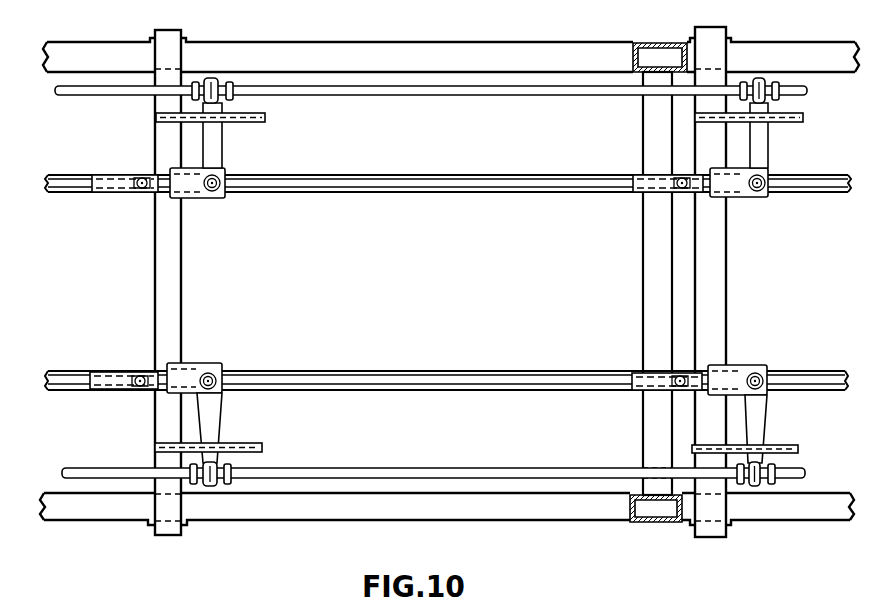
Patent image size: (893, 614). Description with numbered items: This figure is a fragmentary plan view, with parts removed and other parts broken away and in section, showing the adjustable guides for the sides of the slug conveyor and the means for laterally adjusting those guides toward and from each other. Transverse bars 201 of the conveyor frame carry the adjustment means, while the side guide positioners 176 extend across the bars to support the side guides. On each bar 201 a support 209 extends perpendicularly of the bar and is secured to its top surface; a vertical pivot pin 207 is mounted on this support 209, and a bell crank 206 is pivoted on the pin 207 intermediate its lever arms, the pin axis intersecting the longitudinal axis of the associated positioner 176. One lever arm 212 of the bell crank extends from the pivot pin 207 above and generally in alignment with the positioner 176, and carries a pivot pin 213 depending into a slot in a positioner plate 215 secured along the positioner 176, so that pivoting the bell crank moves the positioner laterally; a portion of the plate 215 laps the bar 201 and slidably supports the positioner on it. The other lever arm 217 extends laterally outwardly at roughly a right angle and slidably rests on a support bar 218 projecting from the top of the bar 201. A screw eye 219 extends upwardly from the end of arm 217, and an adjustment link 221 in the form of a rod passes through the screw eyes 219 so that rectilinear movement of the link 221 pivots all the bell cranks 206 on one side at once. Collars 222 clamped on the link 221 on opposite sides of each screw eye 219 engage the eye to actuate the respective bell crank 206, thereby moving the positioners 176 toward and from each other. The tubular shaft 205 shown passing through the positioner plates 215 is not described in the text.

The side guide positioner 176 is at (391, 191).
The transverse bar 201 is at (155, 282).
The tubular shaft 205 is at (492, 183).
The bell crank 206 is at (764, 153).
The vertical pivot pin 207 is at (224, 198).
The support 209 is at (190, 199).
The lever arm 212 is at (703, 197).
The pivot pin 213 is at (145, 177).
The positioner plate 215 is at (110, 175).
The lever arm 217 is at (226, 152).
The support bar 218 is at (256, 121).
The screw eye 219 is at (211, 78).
The adjustment link 221 is at (458, 95).
The collar 222 is at (195, 82).